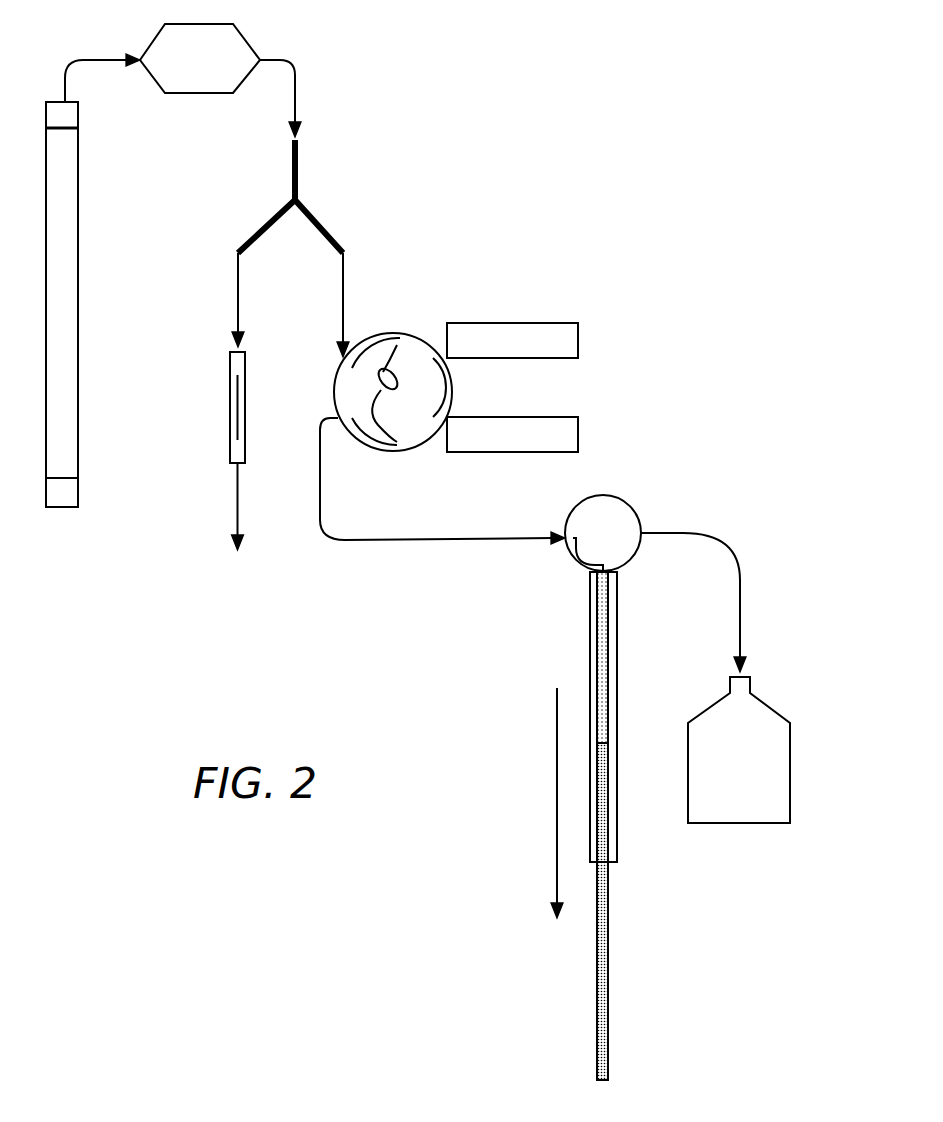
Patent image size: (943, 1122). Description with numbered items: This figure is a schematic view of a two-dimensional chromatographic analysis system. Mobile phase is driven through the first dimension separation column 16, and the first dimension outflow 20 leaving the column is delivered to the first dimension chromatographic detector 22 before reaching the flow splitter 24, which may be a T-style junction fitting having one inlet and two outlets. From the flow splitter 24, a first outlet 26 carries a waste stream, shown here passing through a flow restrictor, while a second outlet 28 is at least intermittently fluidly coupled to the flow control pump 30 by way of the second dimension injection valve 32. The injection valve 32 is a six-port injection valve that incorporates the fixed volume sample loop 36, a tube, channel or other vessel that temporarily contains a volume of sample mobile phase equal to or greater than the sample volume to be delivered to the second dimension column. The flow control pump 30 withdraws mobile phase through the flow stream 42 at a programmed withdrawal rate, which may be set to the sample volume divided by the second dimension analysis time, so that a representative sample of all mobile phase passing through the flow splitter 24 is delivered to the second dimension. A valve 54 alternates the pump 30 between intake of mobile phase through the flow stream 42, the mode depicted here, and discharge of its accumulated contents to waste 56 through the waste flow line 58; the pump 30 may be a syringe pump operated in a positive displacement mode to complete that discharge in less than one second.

The first dimension separation column 16 is at (80, 258).
The first dimension outflow 20 is at (80, 60).
The first dimension chromatographic detector 22 is at (203, 93).
The flow splitter 24 is at (305, 193).
The first outlet 26 is at (270, 222).
The second outlet 28 is at (323, 228).
The second dimension injection valve 32 is at (397, 320).
The fixed volume sample loop 36 is at (410, 361).
The flow stream 42 is at (412, 540).
The valve 54 is at (640, 522).
The waste flow line 58 is at (740, 577).
The waste 56 is at (790, 723).
The flow control pump 30 is at (617, 700).